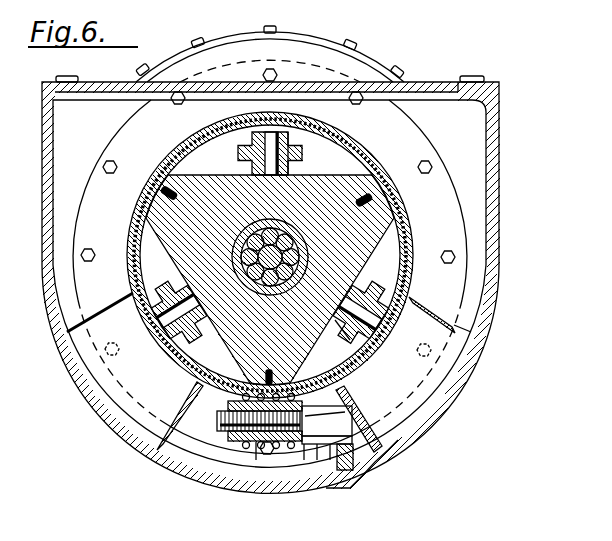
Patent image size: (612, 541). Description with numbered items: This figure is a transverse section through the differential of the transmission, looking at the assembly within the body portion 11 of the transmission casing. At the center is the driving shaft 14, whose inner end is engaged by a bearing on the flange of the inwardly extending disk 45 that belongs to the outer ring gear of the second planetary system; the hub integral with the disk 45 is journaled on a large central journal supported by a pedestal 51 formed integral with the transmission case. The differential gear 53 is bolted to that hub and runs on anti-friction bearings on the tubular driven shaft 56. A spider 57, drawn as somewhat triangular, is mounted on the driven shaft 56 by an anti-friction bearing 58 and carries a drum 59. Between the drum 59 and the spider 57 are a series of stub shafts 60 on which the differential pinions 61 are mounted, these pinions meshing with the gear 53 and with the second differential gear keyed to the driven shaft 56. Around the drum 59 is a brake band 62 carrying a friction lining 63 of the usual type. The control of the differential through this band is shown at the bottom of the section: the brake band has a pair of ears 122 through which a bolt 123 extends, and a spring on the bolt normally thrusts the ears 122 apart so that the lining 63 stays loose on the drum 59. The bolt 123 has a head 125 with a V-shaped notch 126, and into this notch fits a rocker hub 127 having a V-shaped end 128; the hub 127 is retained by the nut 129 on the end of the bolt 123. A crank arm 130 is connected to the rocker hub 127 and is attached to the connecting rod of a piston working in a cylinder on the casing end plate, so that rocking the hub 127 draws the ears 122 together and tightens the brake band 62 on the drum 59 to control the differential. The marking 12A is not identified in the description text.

The body portion 11 is at (68, 364).
The driving shaft 14 is at (262, 259).
The inwardly extending disk 45 is at (96, 191).
The pedestal 51 is at (112, 313).
The gear 53 is at (270, 274).
The tubular driven shaft 56 is at (257, 281).
The spider 57 is at (358, 243).
The anti-friction bearing 58 is at (321, 334).
The drum 59 is at (406, 227).
The stub shafts 60 is at (256, 151).
The differential pinions 61 is at (295, 152).
The brake band 62 is at (418, 147).
The friction lining 63 is at (427, 259).
The ears 122 is at (282, 442).
The bolt 12A is at (256, 442).
The bolt 123 is at (277, 443).
The head 125 is at (304, 445).
The V-shaped notch 126 is at (317, 446).
The rocker hub 127 is at (330, 452).
The V-shaped end 128 is at (319, 418).
The nut 129 is at (356, 421).
The crank arm 130 is at (350, 440).